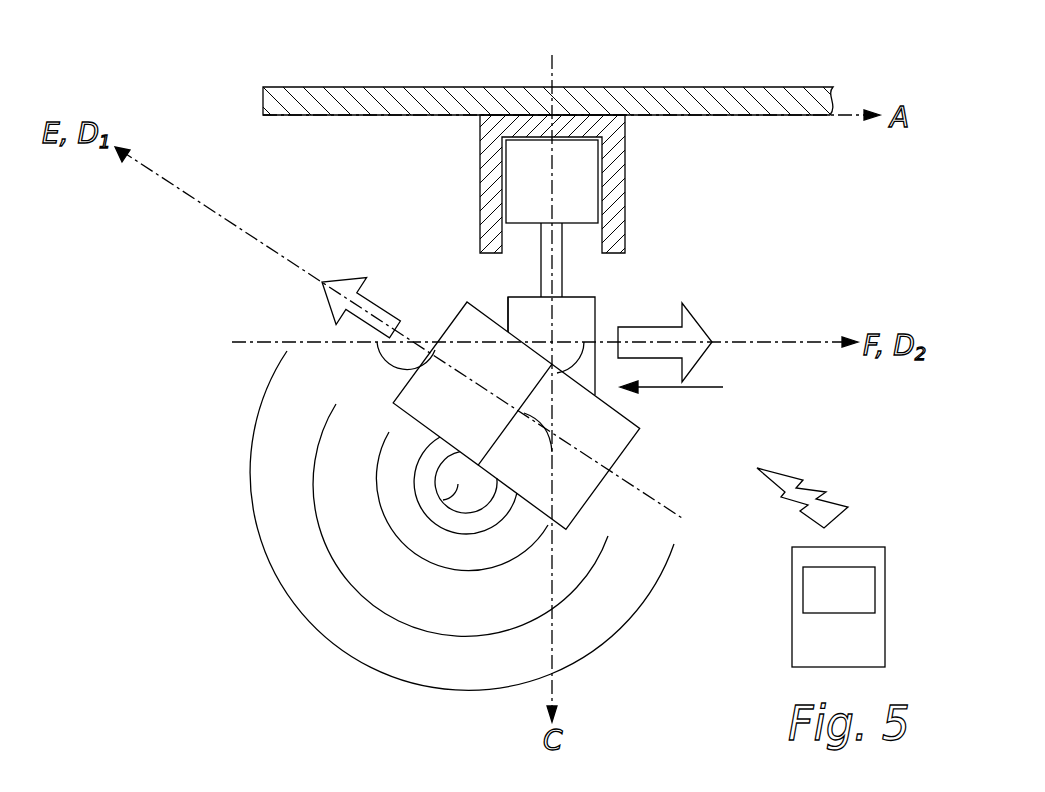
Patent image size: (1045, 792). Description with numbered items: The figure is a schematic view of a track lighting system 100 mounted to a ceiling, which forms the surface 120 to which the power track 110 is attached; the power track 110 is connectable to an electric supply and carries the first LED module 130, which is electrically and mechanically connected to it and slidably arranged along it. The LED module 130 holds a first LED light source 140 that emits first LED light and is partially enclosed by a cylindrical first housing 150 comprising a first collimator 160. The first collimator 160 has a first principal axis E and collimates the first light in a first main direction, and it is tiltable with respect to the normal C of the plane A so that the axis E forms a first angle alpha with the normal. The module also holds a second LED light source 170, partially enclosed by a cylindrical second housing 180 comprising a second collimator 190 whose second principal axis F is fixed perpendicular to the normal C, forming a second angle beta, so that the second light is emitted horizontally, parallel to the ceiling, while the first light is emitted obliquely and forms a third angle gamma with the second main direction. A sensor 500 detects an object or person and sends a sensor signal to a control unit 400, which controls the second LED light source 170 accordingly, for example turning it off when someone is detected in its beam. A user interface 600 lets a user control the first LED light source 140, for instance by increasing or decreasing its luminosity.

The track lighting system 100 is at (417, 376).
The power track 110 is at (483, 163).
The surface 120 is at (763, 116).
The first LED module 130 is at (522, 225).
The first LED light source 140 is at (417, 400).
The first housing 150 is at (512, 526).
The first collimator 160 is at (628, 443).
The second LED light source 170 is at (585, 308).
The second housing 180 is at (723, 387).
The second collimator 190 is at (507, 303).
The control unit 400 is at (791, 572).
The sensor 500 is at (455, 498).
The user interface 600 is at (803, 602).